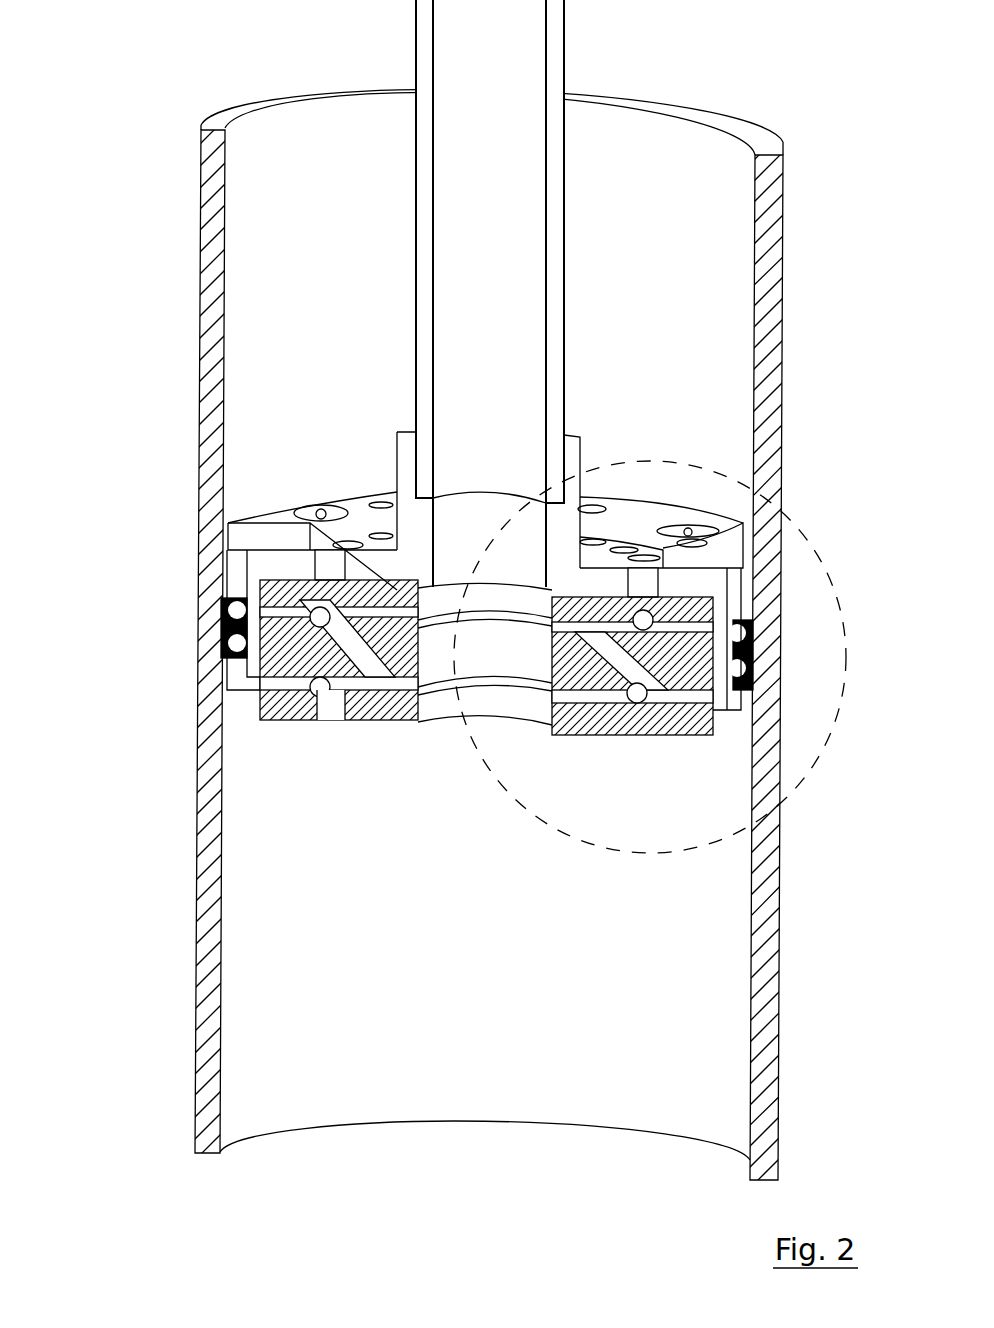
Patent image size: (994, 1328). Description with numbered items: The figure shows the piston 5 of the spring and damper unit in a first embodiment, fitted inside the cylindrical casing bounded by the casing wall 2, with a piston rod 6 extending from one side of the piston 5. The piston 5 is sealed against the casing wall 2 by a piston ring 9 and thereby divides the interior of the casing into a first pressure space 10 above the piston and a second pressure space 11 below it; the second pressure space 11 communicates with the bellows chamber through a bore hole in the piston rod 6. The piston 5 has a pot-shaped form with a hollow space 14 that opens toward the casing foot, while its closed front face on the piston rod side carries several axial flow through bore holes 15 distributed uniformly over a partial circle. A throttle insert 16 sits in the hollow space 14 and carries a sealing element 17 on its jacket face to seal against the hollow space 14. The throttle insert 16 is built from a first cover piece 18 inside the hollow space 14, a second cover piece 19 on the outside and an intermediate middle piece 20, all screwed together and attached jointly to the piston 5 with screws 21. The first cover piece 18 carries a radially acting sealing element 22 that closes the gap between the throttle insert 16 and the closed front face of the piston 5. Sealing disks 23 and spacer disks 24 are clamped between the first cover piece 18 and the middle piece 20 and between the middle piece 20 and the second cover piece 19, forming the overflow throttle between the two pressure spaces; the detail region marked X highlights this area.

The casing wall 2 is at (780, 327).
The piston 5 is at (667, 448).
The piston rod 6 is at (518, 290).
The piston ring 9 is at (750, 626).
The first pressure space 10 is at (303, 290).
The second pressure space 11 is at (300, 873).
The hollow space 14 is at (717, 687).
The axial flow through bore holes 15 is at (628, 546).
The throttle insert 16 is at (487, 832).
The sealing element 17 is at (224, 658).
The first cover piece 18 is at (228, 523).
The second cover piece 19 is at (262, 707).
The middle piece 20 is at (263, 643).
The screws 21 is at (320, 515).
The radially acting sealing element 22 is at (375, 590).
The sealing disks 23 is at (655, 600).
The spacer disks 24 is at (263, 582).
The detail region X is at (650, 685).